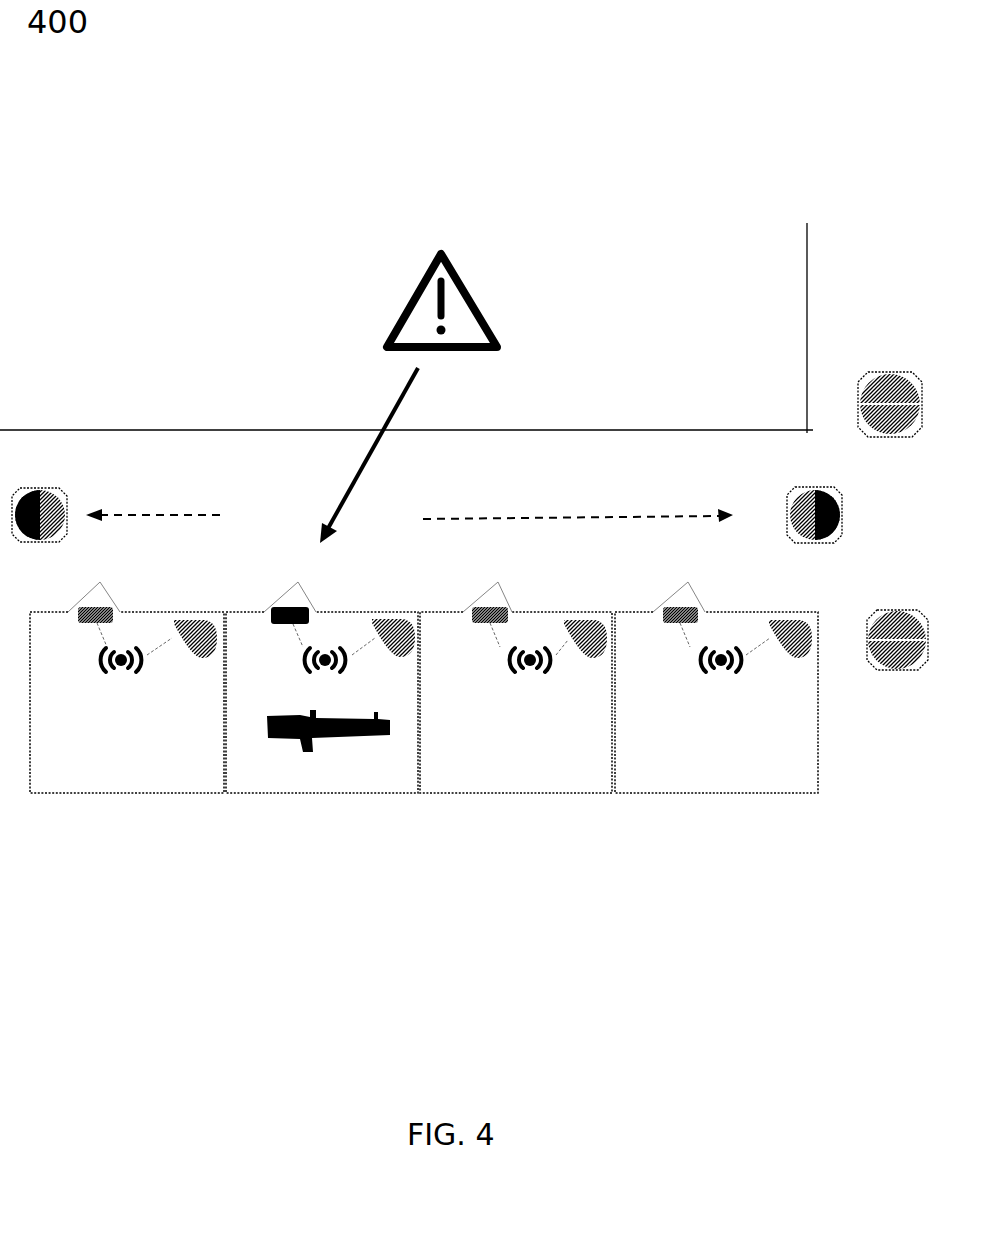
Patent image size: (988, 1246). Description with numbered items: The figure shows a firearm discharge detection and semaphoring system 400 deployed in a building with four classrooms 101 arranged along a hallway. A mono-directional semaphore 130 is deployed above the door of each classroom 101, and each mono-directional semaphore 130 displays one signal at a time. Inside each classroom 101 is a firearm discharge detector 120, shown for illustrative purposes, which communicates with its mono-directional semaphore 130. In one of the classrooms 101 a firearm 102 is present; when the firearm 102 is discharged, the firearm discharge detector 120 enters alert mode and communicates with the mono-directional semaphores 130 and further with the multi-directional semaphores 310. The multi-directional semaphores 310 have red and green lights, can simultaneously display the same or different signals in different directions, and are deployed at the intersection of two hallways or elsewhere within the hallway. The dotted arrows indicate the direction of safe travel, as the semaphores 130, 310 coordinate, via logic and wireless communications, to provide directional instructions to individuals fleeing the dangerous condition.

The firearm discharge detection and semaphoring system 400 is at (458, 503).
The multi-directional semaphore 310 is at (470, 530).
The classroom 101 is at (424, 702).
The mono-directional semaphore 130 is at (383, 601).
The firearm discharge detector 120 is at (454, 651).
The firearm 102 is at (313, 731).